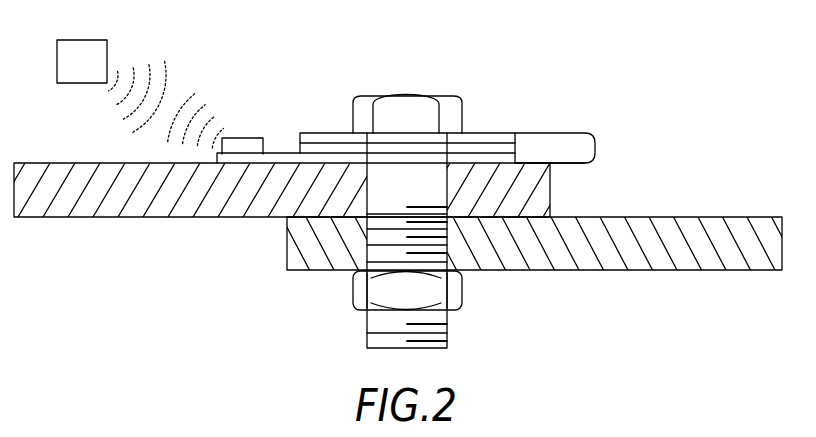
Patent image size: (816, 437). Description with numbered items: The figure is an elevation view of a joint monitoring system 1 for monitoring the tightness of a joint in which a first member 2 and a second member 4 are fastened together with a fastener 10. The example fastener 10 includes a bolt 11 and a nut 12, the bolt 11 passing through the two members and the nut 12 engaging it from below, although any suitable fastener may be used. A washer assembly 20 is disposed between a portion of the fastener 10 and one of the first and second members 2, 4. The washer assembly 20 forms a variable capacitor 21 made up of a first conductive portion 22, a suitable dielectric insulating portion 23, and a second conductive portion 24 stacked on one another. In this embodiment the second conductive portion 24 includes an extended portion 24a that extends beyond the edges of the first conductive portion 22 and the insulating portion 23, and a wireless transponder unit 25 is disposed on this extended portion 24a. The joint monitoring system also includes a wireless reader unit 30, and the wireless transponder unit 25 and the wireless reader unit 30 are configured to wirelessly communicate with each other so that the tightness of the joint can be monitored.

The fastening structure 1 is at (597, 21).
The first member 2 is at (40, 163).
The second member 4 is at (756, 217).
The fastener 10 is at (433, 178).
The bolt 11 is at (408, 96).
The nut 12 is at (462, 293).
The washer assembly 20 is at (156, 155).
The variable capacitor 21 is at (596, 138).
The first conductive portion 22 is at (519, 148).
The insulating portion 23 is at (528, 148).
The second conductive portion 24 is at (556, 163).
The extended portion 24a is at (277, 153).
The wireless transponder unit 25 is at (252, 138).
The wireless reader unit 30 is at (55, 51).